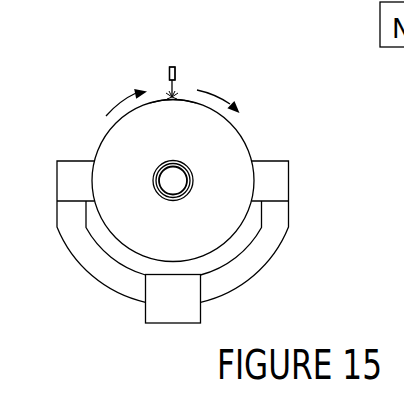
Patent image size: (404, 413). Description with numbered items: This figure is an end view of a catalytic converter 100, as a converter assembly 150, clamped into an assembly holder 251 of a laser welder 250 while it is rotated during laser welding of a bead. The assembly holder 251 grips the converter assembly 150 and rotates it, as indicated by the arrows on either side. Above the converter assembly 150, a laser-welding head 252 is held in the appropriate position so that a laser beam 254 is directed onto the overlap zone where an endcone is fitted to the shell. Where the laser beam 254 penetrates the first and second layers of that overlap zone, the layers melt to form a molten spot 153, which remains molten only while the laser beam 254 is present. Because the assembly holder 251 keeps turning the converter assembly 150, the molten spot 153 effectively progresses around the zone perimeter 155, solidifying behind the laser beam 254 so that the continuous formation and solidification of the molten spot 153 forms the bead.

The catalytic converter 100 is at (234, 156).
The converter assembly 150 is at (213, 102).
The molten spot 153 is at (177, 96).
The zone perimeter 155 is at (100, 145).
The assembly holder 251 is at (275, 178).
The laser welder 250 is at (172, 66).
The laser-welding head 252 is at (176, 66).
The laser beam 254 is at (168, 96).